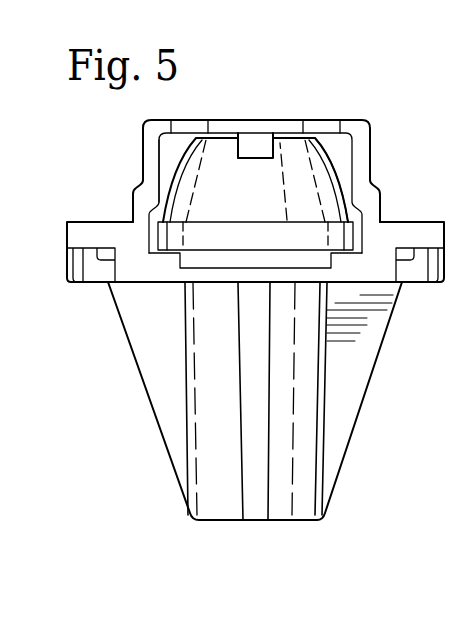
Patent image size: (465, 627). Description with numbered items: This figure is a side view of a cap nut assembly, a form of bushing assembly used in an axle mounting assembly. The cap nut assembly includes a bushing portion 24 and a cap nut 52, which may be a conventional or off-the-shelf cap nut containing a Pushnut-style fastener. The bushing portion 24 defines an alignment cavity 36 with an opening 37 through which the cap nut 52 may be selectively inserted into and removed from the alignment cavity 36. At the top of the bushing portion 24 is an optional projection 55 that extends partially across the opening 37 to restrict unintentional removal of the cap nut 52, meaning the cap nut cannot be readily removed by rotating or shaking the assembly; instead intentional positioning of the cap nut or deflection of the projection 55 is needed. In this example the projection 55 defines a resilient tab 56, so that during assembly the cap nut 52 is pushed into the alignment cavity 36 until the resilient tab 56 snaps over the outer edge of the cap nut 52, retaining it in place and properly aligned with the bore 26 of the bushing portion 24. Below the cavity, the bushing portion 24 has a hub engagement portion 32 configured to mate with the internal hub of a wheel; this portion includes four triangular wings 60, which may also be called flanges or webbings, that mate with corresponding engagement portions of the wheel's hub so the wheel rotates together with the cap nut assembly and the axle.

The bushing portion 24 is at (108, 356).
The bore 26 is at (275, 521).
The hub engagement portion 32 is at (150, 416).
The alignment cavity 36 is at (327, 140).
The opening 37 is at (166, 172).
The cap nut 52 is at (268, 205).
The projection 55 is at (232, 148).
The resilient tab 56 is at (254, 152).
The triangular wings 60 is at (180, 385).